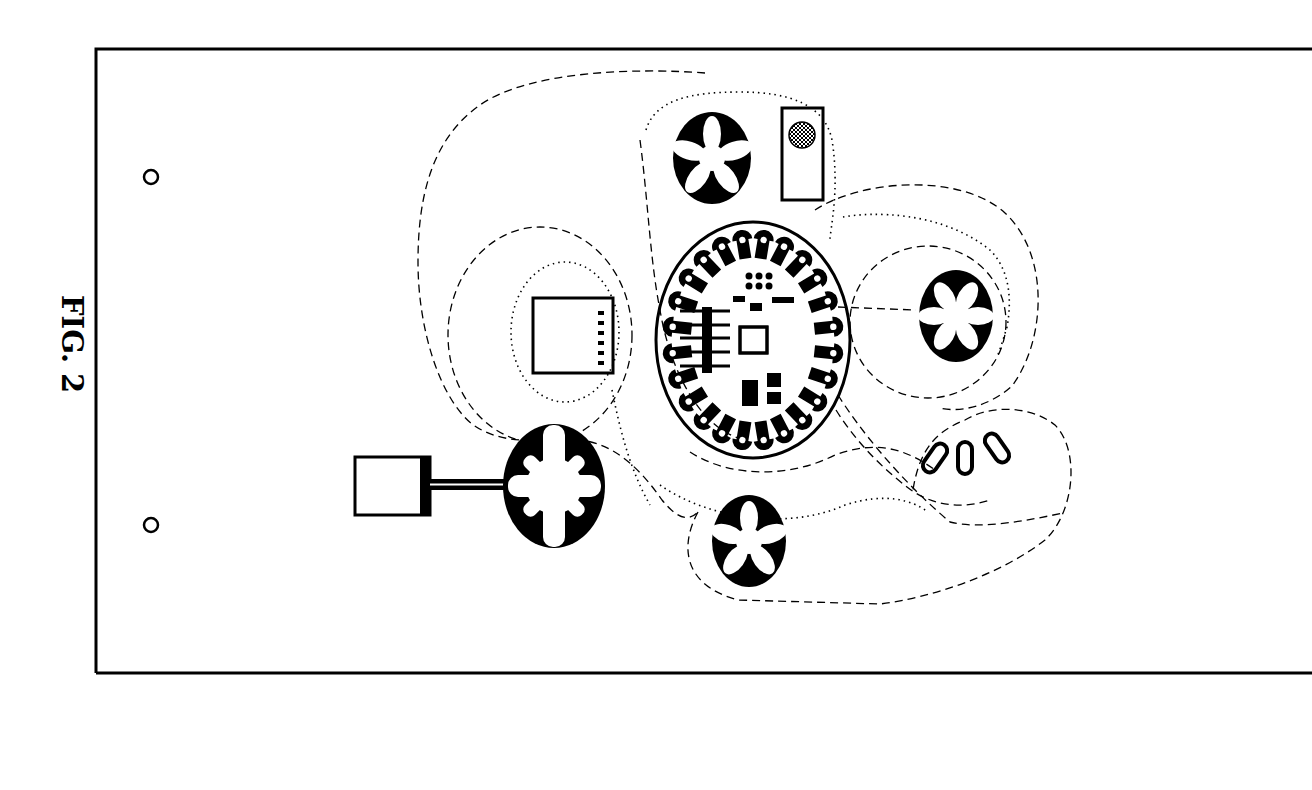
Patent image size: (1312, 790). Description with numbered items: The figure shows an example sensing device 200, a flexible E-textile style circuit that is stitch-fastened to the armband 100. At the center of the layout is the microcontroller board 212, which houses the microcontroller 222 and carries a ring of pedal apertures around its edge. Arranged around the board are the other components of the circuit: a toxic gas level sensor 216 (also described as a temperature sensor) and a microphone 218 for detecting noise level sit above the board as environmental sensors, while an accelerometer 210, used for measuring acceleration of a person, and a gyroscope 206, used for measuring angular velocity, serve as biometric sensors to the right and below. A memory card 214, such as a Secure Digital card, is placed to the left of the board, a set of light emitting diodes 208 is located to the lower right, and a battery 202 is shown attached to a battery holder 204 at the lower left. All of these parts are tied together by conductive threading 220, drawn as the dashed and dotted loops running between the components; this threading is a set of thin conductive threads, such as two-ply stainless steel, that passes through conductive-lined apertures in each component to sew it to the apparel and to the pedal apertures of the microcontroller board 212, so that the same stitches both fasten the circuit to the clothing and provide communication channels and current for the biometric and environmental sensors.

The armband 100 is at (1192, 674).
The sensing device 200 is at (1180, 457).
The battery 202 is at (408, 500).
The battery holder 204 is at (556, 548).
The gyroscope 206 is at (787, 540).
The set of light emitting diodes (LEDs) 208 is at (945, 472).
The accelerometer 210 is at (982, 348).
The microcontroller board 212 is at (683, 250).
The memory card 214 is at (587, 347).
The toxic gas level sensor 216 is at (682, 128).
The microphone 218 is at (826, 130).
The conductive threading 220 is at (998, 567).
The microcontroller 222 is at (762, 339).